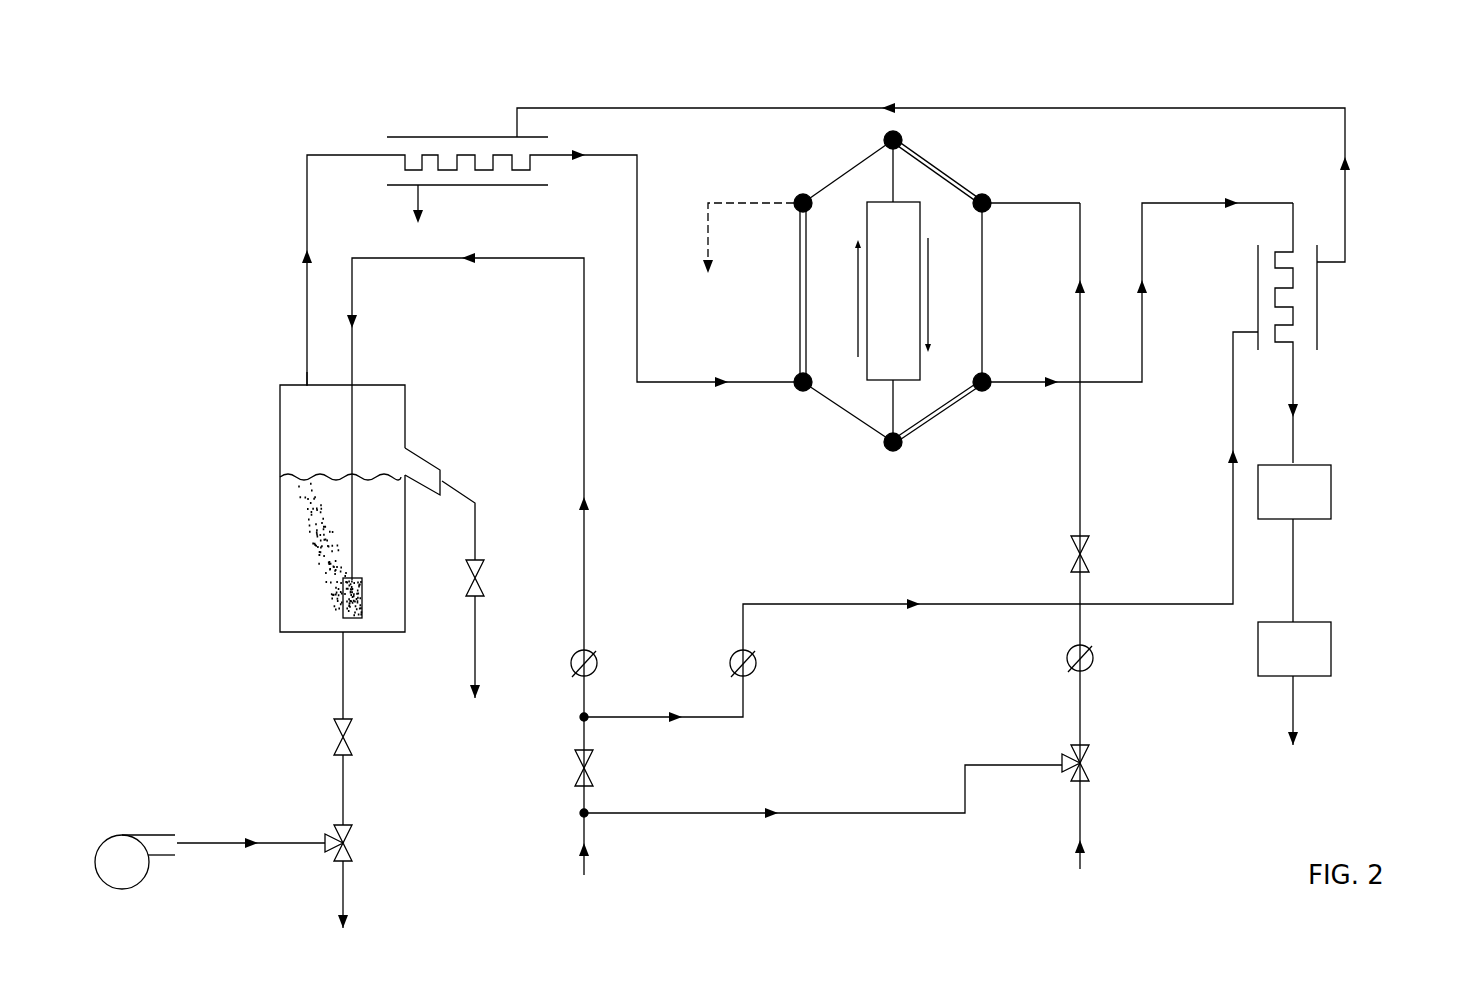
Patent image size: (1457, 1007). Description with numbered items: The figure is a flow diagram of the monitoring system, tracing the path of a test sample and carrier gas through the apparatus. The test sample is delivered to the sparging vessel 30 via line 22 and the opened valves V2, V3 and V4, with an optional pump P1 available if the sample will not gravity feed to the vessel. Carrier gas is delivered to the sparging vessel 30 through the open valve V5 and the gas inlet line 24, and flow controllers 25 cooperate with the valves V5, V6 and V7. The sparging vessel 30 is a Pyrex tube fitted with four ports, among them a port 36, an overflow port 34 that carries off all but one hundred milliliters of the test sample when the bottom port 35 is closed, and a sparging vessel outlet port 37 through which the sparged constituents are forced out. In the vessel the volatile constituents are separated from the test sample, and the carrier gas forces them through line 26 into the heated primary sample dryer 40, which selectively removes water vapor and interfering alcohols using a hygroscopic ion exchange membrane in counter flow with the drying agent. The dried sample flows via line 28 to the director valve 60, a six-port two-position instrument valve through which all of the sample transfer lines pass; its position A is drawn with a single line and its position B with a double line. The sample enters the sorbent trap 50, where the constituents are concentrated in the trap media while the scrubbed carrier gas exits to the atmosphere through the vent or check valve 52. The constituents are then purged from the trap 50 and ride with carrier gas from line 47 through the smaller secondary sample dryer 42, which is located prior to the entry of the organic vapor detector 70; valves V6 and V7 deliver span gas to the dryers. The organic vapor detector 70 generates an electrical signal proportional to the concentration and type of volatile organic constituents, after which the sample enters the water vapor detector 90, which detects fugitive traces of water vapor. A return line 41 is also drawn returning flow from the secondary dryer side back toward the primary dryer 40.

The line 22 is at (286, 833).
The gas inlet line 24 is at (493, 268).
The flow controllers 25 is at (603, 663).
The line 26 is at (295, 234).
The line 28 is at (648, 160).
The sparging vessel 30 is at (268, 530).
The overflow port 34 is at (450, 468).
The bottom port 35 is at (352, 642).
The port 36 is at (362, 378).
The sparging vessel outlet port 37 is at (294, 378).
The primary sample dryer 40 is at (480, 130).
The return conduit 41 is at (605, 101).
The secondary sample dryer 42 is at (1328, 301).
The line 47 is at (1152, 346).
The sorbent trap 50 is at (887, 350).
The vent or check valve 52 is at (741, 258).
The director valve 60 is at (936, 427).
The organic vapor detector 70 is at (1345, 492).
The water vapor detector 90 is at (1345, 645).
The position A is at (855, 428).
The position B is at (946, 166).
The pump P1 is at (135, 862).
The valve V2 is at (360, 843).
The valve V3 is at (360, 737).
The valve V4 is at (490, 578).
The valve V5 is at (599, 768).
The valve V6 is at (1095, 763).
The valve V7 is at (1095, 554).